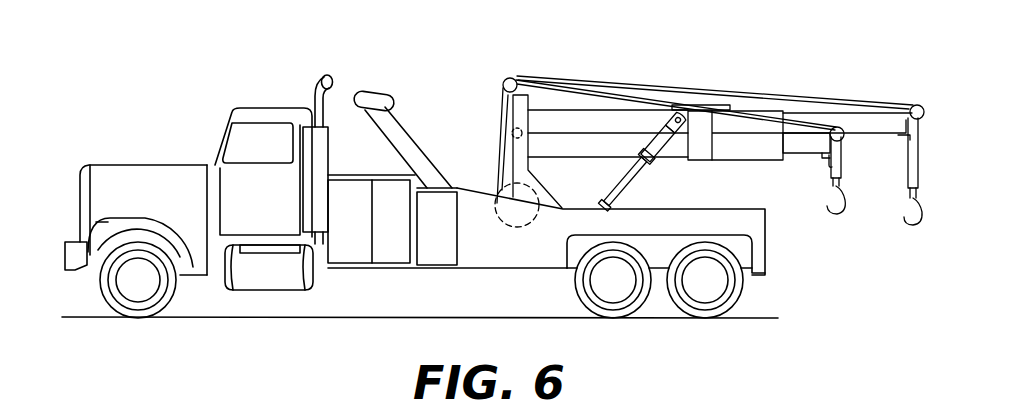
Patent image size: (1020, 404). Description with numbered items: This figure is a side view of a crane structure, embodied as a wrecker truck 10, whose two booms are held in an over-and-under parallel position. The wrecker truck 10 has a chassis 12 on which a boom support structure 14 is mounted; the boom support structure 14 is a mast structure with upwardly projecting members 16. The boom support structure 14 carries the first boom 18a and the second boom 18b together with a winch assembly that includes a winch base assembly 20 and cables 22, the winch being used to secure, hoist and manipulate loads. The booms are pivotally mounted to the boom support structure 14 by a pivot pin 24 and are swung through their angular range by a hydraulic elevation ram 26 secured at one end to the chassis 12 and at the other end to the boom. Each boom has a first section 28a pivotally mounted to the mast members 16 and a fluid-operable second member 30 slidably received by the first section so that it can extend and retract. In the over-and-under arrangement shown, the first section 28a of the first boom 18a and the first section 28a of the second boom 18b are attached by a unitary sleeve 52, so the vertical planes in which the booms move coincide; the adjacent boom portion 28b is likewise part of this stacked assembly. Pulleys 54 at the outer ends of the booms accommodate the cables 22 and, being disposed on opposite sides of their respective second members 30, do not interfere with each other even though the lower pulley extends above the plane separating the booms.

The wrecker truck 10 is at (398, 66).
The chassis 12 is at (765, 233).
The boom support structure 14 is at (490, 96).
The upwardly projecting members 16 is at (515, 148).
The first boom 18a is at (622, 104).
The second boom 18b is at (601, 164).
The winch base assembly 20 is at (498, 212).
The cables 22 is at (810, 95).
The pivot pin 24 is at (512, 130).
The hydraulic elevation ram 26 is at (643, 175).
The first section 28a is at (573, 106).
The second boom member 28b is at (757, 163).
The second member 30 is at (872, 126).
The unitary sleeve 52 is at (736, 122).
The pulleys 54 is at (841, 136).